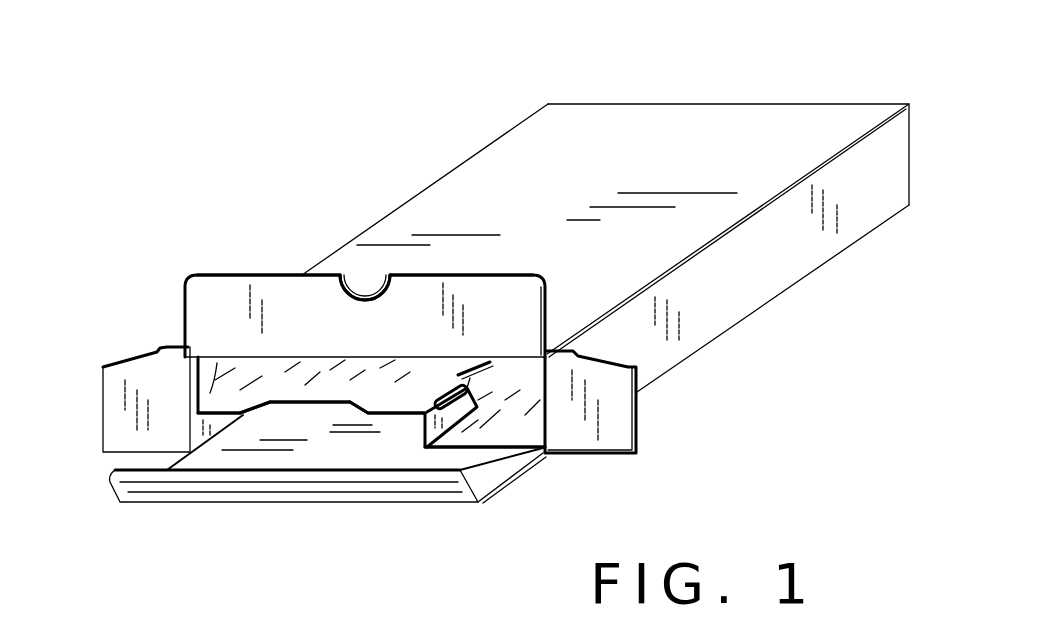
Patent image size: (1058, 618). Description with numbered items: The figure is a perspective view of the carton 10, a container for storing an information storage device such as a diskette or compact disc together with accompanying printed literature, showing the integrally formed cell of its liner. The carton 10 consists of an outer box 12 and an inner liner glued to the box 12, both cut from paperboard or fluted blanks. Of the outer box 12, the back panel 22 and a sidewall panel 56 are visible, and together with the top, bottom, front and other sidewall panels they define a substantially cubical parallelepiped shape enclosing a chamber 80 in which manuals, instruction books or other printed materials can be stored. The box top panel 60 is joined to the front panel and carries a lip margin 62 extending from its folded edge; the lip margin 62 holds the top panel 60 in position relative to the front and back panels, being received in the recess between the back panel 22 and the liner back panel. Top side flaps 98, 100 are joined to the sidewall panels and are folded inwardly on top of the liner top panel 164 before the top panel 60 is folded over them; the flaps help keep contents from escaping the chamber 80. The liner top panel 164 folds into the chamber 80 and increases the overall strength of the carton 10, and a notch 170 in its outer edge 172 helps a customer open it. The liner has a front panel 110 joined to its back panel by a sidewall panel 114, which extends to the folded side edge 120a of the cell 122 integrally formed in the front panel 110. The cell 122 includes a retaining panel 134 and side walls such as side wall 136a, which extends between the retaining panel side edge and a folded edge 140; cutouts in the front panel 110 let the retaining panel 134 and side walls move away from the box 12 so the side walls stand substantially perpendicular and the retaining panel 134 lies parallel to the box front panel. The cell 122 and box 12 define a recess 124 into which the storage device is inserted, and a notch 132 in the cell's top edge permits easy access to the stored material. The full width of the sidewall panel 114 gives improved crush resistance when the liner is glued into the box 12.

The carton 10 is at (801, 74).
The outer box 12 is at (514, 107).
The back panel 22 is at (508, 162).
The sidewall panel 56 is at (780, 253).
The top panel 164 is at (218, 297).
The outer edge 172 is at (281, 274).
The notch 170 is at (368, 297).
The folded side edge 120a is at (232, 390).
The top side flap 98 is at (146, 372).
The sidewall panel 114 is at (208, 393).
The lip margin 62 is at (137, 483).
The retaining panel 134 is at (238, 410).
The notch 132 is at (283, 383).
The recess 124 is at (321, 428).
The cell 122 is at (376, 429).
The folded edge 140 is at (432, 388).
The front panel 110 is at (470, 448).
The top panel 60 is at (517, 473).
The chamber 80 is at (507, 407).
The top side flap 100 is at (590, 423).
The side wall 136a is at (473, 388).